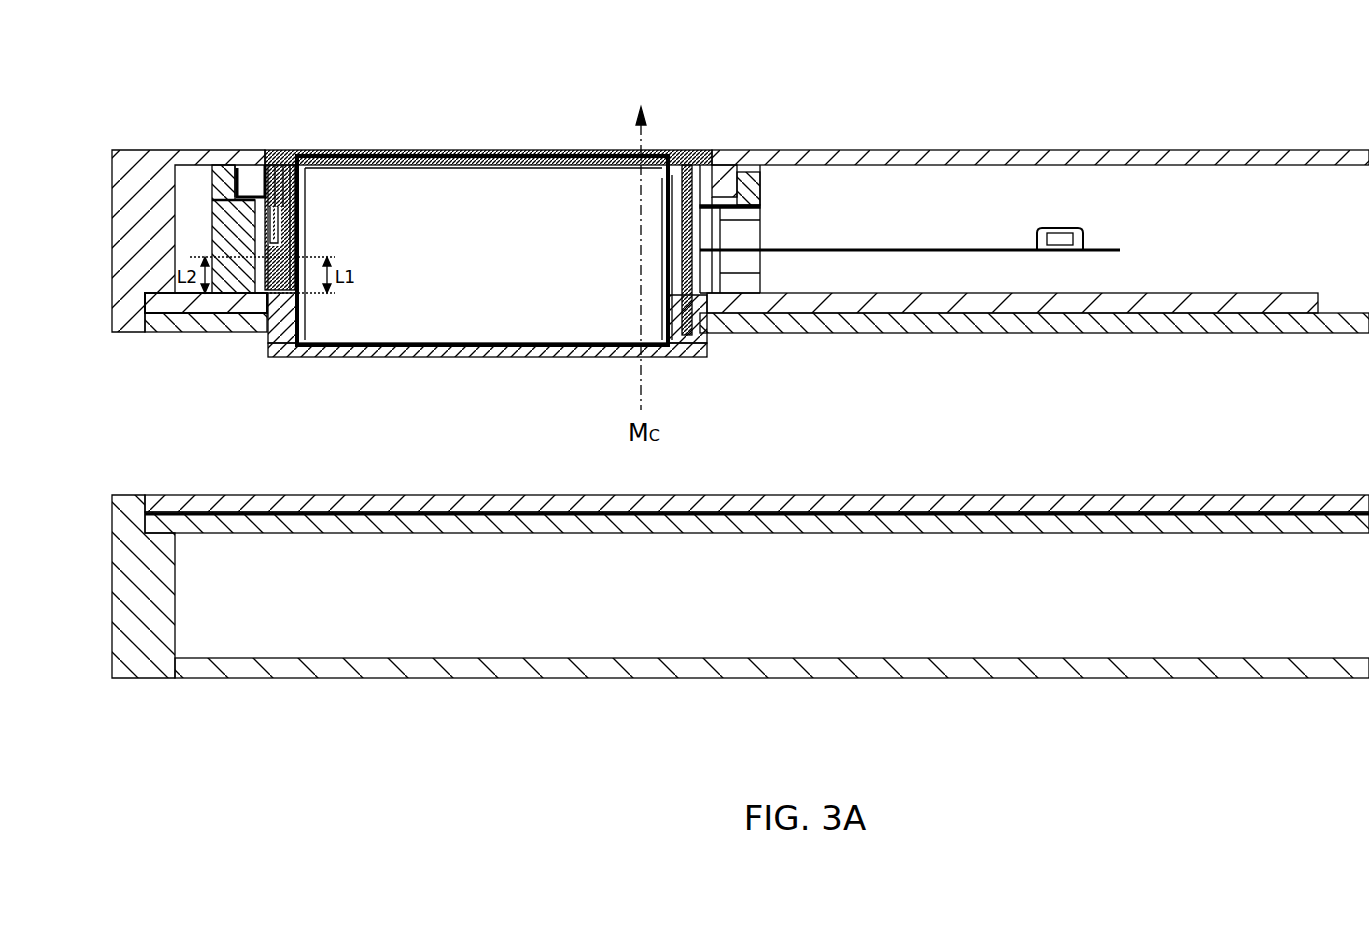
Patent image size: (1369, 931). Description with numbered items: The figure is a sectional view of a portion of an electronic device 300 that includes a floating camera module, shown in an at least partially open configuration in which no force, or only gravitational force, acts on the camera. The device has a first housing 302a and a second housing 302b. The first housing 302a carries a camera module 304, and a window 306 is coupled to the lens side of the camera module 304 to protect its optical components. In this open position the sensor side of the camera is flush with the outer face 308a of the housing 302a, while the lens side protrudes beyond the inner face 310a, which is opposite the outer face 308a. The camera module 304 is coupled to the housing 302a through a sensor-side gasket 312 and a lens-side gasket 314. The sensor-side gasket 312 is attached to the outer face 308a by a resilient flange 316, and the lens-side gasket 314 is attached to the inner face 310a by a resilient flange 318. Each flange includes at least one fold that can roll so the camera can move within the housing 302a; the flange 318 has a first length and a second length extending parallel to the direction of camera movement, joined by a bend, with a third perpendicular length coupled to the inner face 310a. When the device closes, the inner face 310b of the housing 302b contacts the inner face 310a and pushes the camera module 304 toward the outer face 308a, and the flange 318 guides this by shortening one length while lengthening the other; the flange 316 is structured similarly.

The electronic device 300 is at (183, 62).
The first housing 302a is at (848, 151).
The second housing 302b is at (318, 671).
The camera module 304 is at (482, 250).
The window 306 is at (411, 355).
The outer face 308a is at (200, 152).
The inner face 310a is at (126, 332).
The inner face 310b is at (130, 494).
The sensor-side gasket 312 is at (285, 172).
The lens-side gasket 314 is at (283, 350).
The resilient flange 316 is at (253, 196).
The resilient flange 318 is at (270, 318).